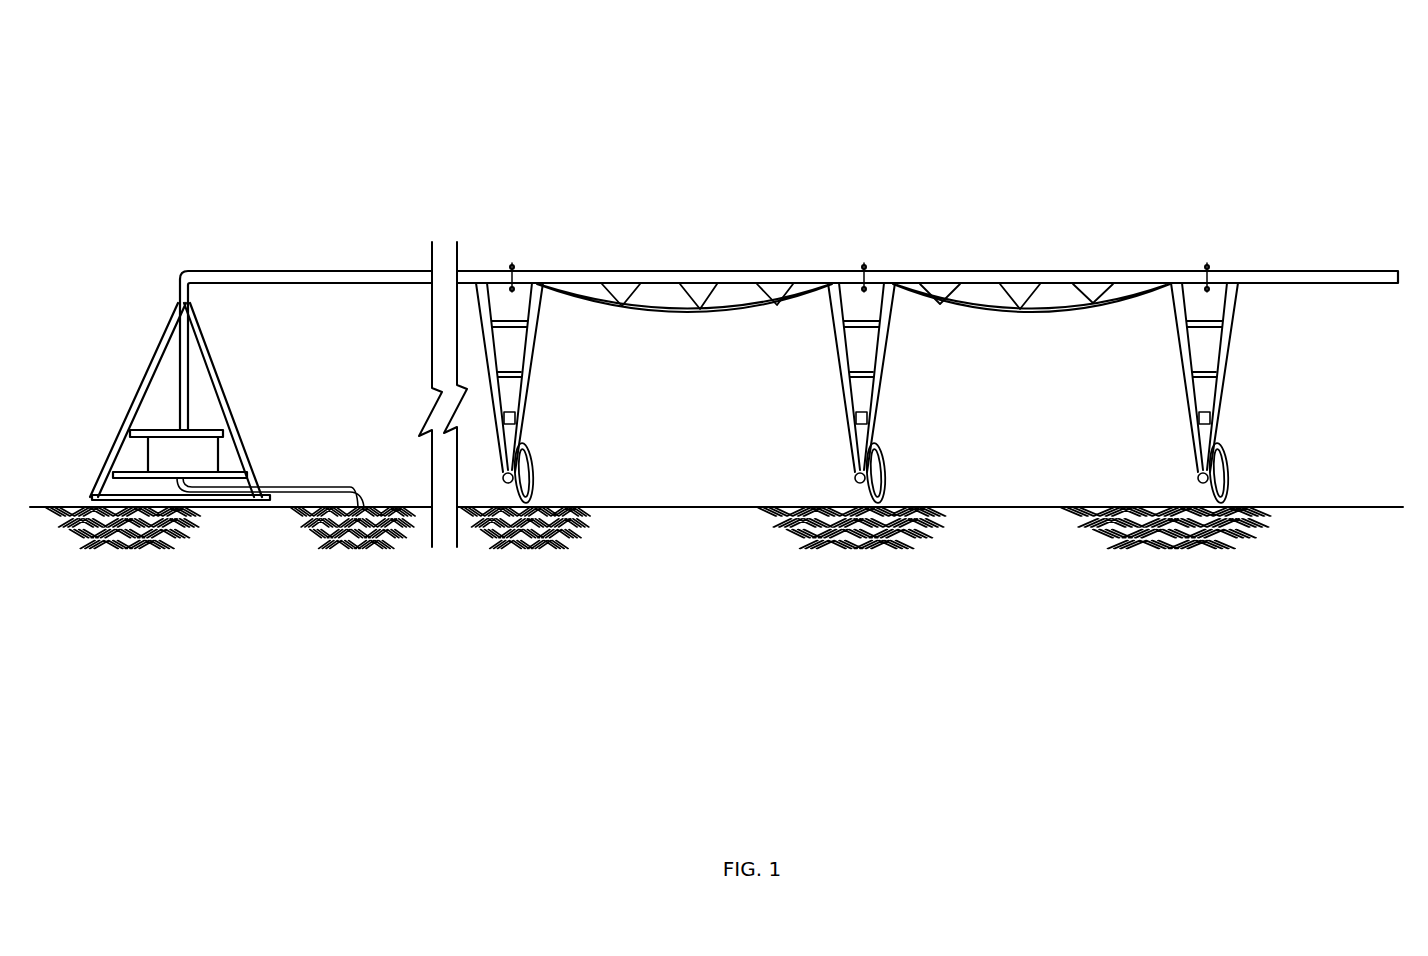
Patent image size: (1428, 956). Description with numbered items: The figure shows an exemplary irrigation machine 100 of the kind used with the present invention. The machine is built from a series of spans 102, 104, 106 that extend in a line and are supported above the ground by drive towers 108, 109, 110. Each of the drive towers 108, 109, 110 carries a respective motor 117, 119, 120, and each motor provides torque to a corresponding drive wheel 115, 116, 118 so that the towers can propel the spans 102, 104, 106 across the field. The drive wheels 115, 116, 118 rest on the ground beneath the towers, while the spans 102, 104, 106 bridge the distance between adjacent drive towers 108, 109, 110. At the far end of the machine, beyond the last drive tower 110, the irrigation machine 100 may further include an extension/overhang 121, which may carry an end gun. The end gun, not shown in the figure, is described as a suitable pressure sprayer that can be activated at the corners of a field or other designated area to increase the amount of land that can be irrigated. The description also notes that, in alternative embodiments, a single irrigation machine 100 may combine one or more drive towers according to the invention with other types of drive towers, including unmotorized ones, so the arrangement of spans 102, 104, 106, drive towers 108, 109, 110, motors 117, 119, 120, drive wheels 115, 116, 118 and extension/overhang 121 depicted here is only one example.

The irrigation machine 100 is at (793, 98).
The span 102 is at (247, 273).
The span 104 is at (652, 272).
The span 106 is at (1010, 273).
The drive tower 108 is at (537, 358).
The drive tower 109 is at (870, 363).
The drive tower 110 is at (1227, 377).
The drive wheel 115 is at (535, 475).
The drive wheel 116 is at (883, 477).
The motor 117 is at (518, 415).
The drive wheel 118 is at (1232, 478).
The motor 119 is at (870, 418).
The motor 120 is at (1222, 418).
The extension/overhang 121 is at (1378, 275).